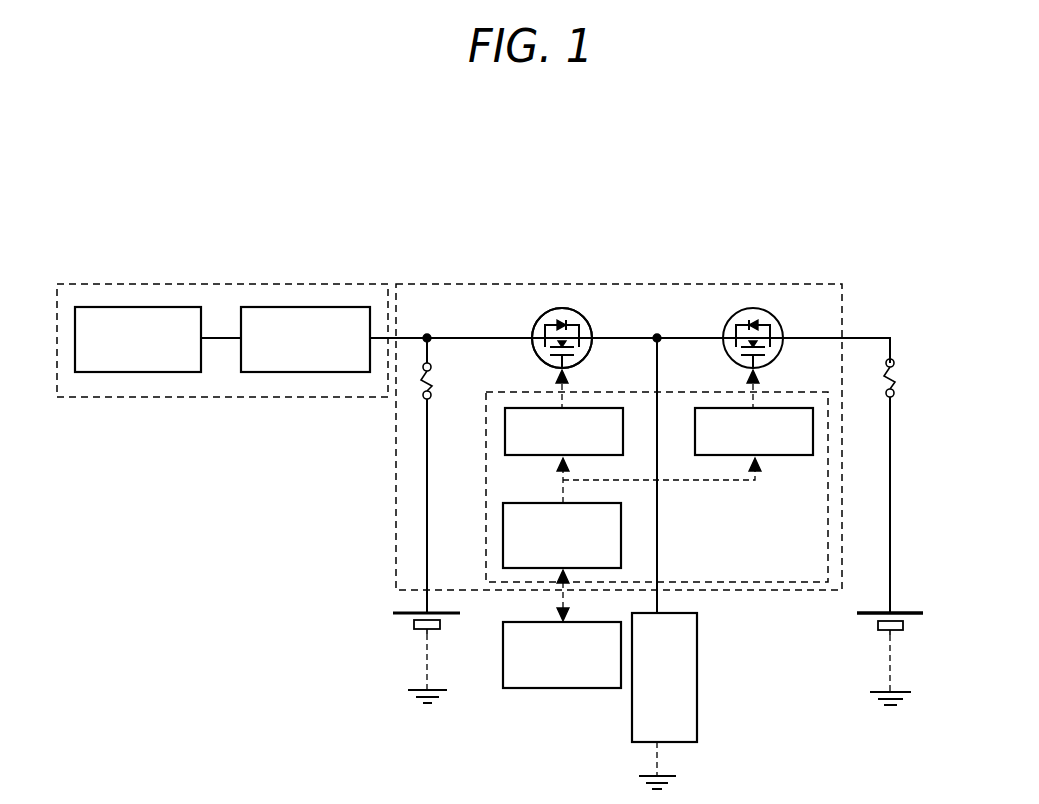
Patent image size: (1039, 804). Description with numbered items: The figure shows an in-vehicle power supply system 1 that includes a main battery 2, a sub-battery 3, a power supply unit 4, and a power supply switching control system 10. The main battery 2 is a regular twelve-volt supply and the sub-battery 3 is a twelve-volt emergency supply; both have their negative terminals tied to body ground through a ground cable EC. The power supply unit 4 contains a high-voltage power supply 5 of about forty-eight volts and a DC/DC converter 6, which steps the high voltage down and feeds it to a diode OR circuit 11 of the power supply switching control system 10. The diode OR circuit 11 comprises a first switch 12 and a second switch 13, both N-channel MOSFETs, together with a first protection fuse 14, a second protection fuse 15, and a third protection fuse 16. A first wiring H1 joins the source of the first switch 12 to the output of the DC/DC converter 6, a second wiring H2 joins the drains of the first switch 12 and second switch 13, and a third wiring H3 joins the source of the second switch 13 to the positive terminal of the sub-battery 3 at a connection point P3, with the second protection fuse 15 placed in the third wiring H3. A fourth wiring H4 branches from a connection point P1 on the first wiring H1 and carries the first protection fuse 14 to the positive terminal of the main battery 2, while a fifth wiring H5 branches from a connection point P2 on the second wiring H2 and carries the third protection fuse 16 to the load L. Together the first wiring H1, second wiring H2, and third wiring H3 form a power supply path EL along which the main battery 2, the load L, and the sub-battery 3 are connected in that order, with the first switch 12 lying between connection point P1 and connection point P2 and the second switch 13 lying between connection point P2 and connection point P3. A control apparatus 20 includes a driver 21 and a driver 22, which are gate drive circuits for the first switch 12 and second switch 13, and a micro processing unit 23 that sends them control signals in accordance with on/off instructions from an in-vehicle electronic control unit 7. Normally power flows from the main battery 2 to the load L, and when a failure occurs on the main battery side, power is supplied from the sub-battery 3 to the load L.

The in-vehicle power supply system 1 is at (834, 216).
The main battery 2 is at (408, 628).
The sub-battery 3 is at (915, 628).
The power supply unit 4 is at (177, 285).
The power supply 5 is at (137, 307).
The DC/DC converter 6 is at (308, 307).
The in-vehicle electronic control unit (ECU) 7 is at (556, 688).
The power supply switching control system 10 is at (646, 285).
The diode OR circuit 11 is at (536, 280).
The first switch 12 is at (565, 307).
The second switch 13 is at (755, 305).
The first protection fuse 14 is at (427, 397).
The second protection fuse 15 is at (893, 385).
The third protection fuse 16 is at (688, 300).
The control apparatus 20 is at (837, 391).
The driver 21 is at (505, 433).
The driver 22 is at (813, 431).
The micro processing unit (MPU) 23 is at (503, 570).
The connection point P1 is at (408, 308).
The connection point P2 is at (647, 300).
The connection point P3 is at (893, 613).
The first wiring H1 is at (456, 306).
The second wiring H2 is at (623, 307).
The third wiring H3 is at (893, 461).
The fourth wiring H4 is at (427, 497).
The fifth wiring H5 is at (659, 537).
The power supply path EL is at (849, 336).
The load L is at (697, 689).
The ground cable EC is at (423, 661).